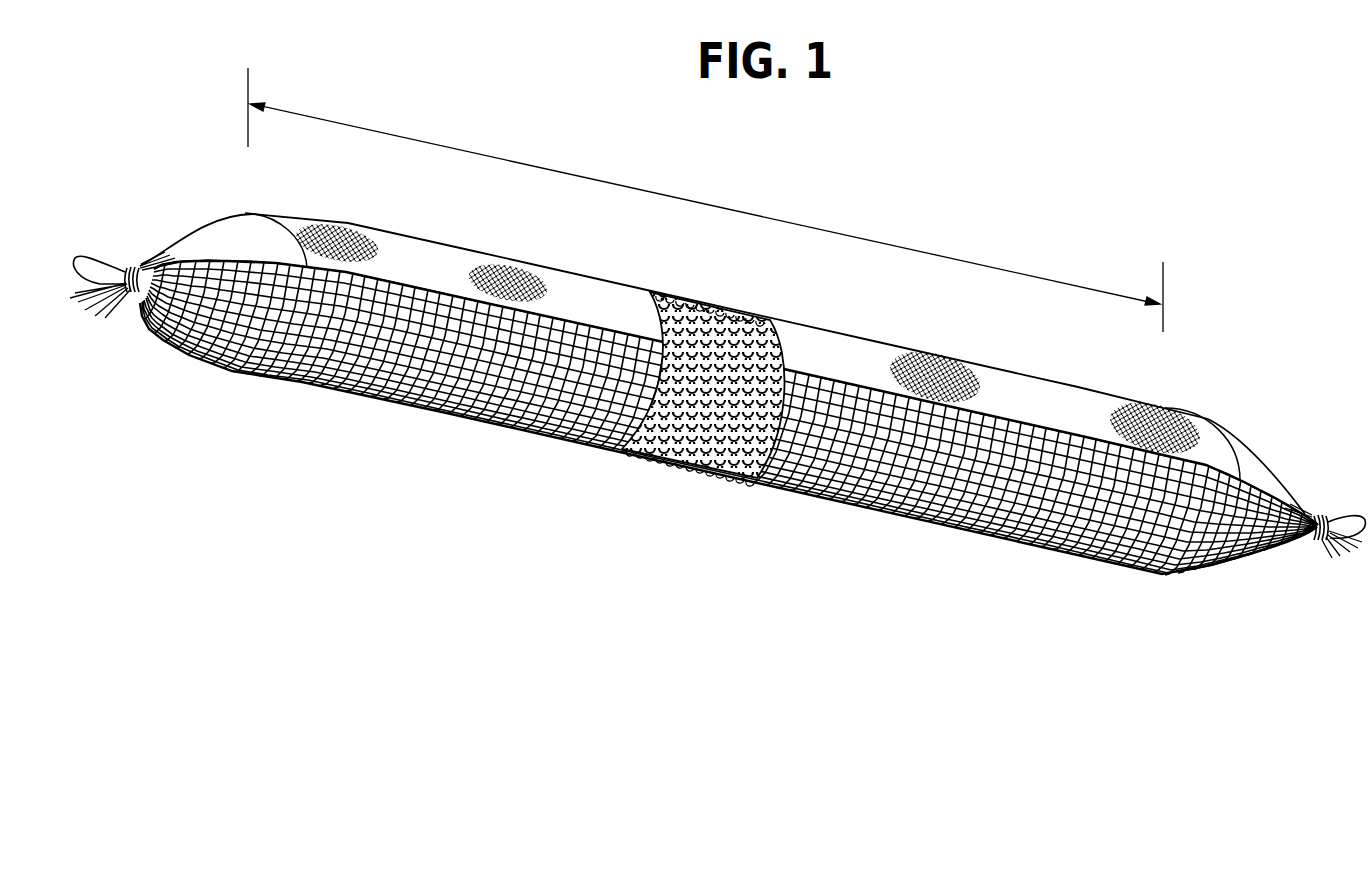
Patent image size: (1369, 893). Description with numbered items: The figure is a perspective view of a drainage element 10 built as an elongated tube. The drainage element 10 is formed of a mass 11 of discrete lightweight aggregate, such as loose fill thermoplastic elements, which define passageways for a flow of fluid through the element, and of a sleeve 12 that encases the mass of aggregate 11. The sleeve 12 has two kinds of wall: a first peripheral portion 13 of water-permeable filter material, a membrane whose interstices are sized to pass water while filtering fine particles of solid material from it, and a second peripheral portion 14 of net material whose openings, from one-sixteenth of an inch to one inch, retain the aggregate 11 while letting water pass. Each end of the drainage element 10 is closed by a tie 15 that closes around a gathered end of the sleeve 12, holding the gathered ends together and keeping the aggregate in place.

The drainage element 10 is at (714, 197).
The mass of discrete lightweight aggregate 11 is at (684, 465).
The sleeve 12 is at (1016, 392).
The first peripheral portion 13 is at (480, 250).
The second peripheral portion 14 is at (483, 420).
The tie 15 is at (128, 266).